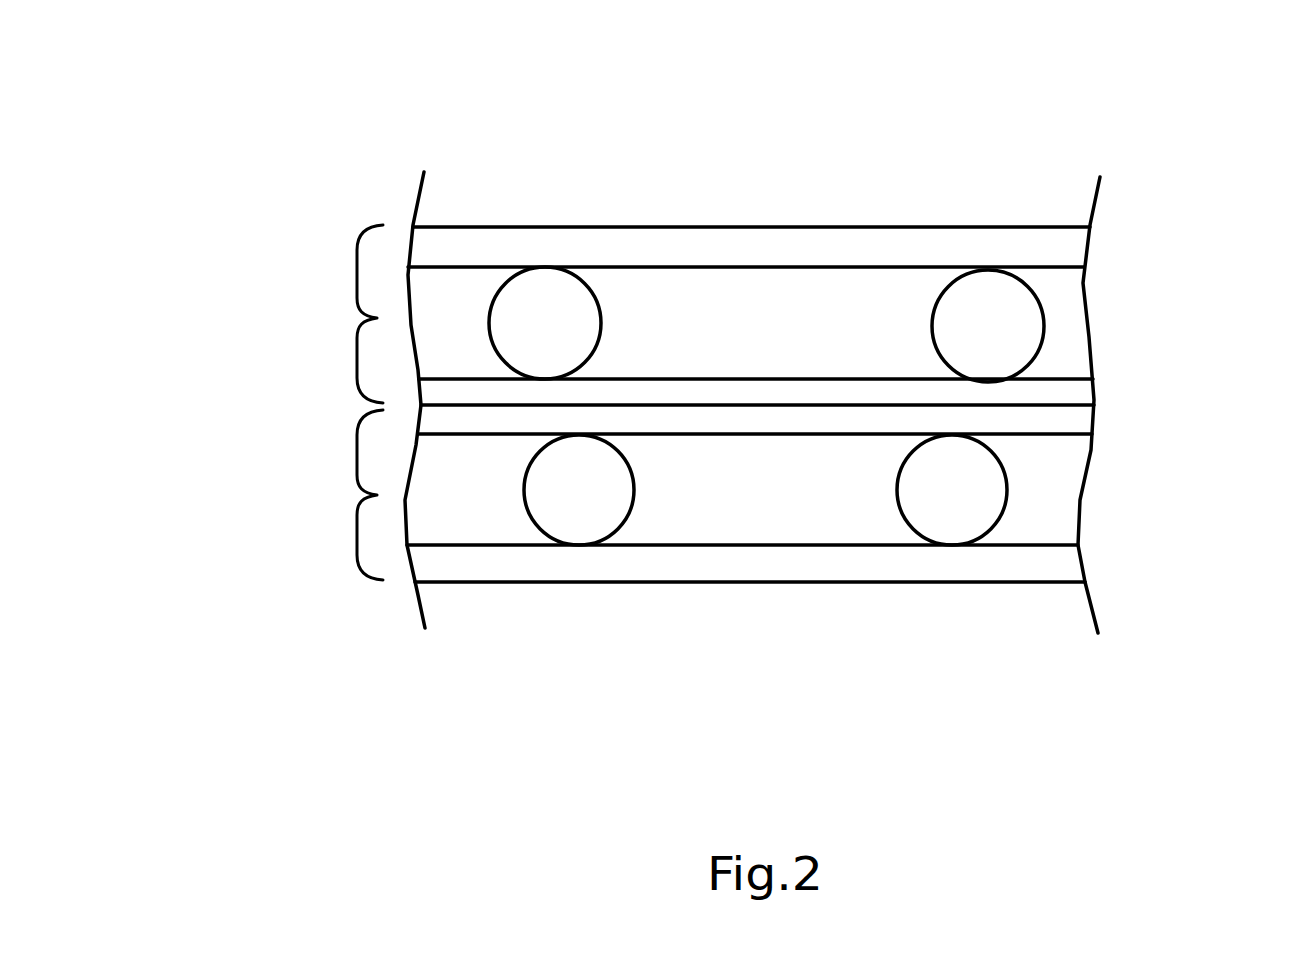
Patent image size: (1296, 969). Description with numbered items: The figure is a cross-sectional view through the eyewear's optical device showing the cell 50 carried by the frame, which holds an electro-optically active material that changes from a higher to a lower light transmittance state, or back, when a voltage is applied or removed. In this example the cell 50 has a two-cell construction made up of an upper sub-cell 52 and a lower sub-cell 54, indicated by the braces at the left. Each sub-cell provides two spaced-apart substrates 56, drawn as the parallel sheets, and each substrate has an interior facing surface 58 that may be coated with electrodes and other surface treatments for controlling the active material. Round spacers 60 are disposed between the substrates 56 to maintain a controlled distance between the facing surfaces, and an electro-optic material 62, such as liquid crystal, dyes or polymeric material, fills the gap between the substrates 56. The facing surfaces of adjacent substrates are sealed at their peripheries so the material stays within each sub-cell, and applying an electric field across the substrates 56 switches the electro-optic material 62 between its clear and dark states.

The cell 50 is at (842, 155).
The sub-cell 52 is at (335, 314).
The sub-cell 54 is at (328, 495).
The substrate 56 is at (500, 243).
The interior facing surface 58 is at (641, 273).
The spacer 60 is at (573, 512).
The electro-optic material 62 is at (765, 322).